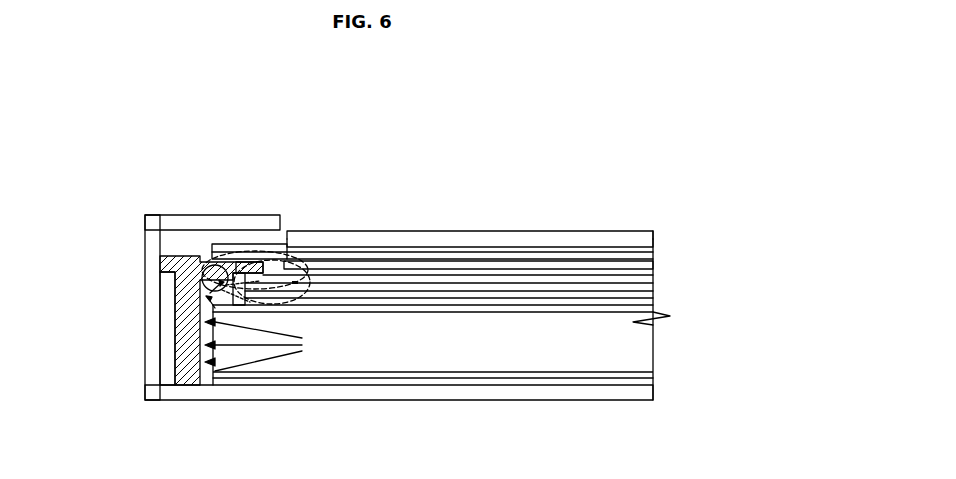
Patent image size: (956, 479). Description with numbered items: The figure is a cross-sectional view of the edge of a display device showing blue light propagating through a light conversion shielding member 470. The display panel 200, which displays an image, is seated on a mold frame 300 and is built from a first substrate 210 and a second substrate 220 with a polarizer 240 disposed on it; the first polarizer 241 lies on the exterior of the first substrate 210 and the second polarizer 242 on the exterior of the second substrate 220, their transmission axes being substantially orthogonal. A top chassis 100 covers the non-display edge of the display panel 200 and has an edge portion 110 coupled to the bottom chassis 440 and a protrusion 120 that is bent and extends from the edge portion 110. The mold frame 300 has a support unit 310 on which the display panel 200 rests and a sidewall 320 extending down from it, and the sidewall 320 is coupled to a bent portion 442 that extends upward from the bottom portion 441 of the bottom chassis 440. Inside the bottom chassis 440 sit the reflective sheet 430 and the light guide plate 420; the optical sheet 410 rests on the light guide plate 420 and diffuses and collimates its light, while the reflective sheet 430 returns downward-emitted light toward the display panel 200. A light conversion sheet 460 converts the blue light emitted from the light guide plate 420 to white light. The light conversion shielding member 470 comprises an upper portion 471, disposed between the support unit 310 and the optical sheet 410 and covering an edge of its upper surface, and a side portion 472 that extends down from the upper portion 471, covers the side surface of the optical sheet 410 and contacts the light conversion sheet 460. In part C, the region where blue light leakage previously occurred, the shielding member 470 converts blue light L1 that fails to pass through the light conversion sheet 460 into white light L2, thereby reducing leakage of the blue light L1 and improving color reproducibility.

The top chassis 100 is at (52, 203).
The edge portion 110 is at (155, 257).
The protrusion 120 is at (205, 220).
The display panel 200 is at (600, 157).
The first substrate 210 is at (595, 236).
The second substrate 220 is at (527, 243).
The polarizer 240 is at (465, 157).
The first polarizer 241 is at (455, 262).
The second polarizer 242 is at (392, 250).
The mold frame 300 is at (52, 297).
The support unit 310 is at (192, 292).
The sidewall 320 is at (190, 342).
The optical sheet 410 is at (660, 283).
The light guide plate 420 is at (632, 345).
The reflective sheet 430 is at (632, 378).
The bottom chassis 440 is at (52, 373).
The bottom portion 441 is at (204, 395).
The bent portion 442 is at (168, 364).
The light conversion sheet 460 is at (447, 312).
The light conversion shielding member 470 is at (292, 126).
The upper portion 471 is at (250, 262).
The side portion 472 is at (212, 268).
The blue light L1 is at (224, 265).
The white light L2 is at (262, 272).
The part C is at (268, 282).